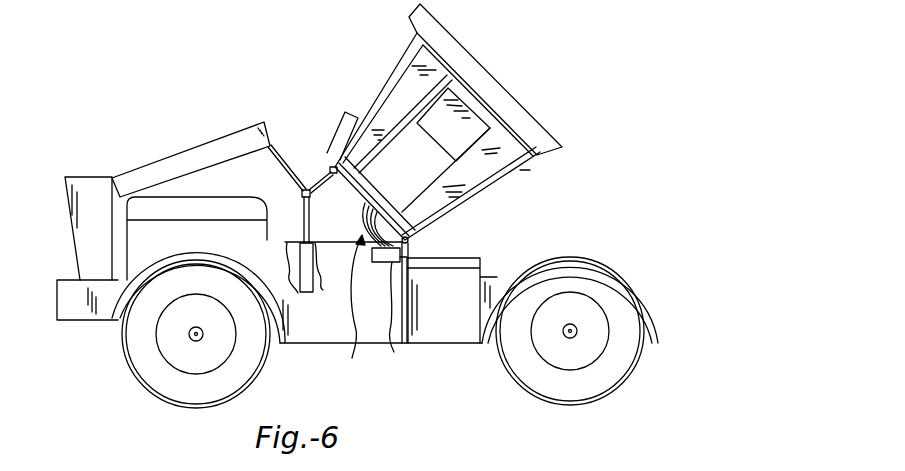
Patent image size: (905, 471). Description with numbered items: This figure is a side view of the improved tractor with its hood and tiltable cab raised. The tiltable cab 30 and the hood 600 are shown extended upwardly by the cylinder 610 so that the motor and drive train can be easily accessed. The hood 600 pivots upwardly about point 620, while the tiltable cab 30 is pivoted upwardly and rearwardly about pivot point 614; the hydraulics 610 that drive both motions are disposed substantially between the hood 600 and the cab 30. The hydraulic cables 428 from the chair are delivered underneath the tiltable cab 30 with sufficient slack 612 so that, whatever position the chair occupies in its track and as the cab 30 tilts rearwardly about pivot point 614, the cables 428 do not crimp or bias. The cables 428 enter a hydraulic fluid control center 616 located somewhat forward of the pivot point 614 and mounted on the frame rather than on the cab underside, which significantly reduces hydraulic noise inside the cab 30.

The tiltable cab 30 is at (499, 81).
The hood 600 is at (190, 148).
The cylinder 610 is at (322, 292).
The slack 612 is at (357, 210).
The pivot point 614 is at (410, 240).
The hydraulic fluid control center 616 is at (406, 313).
The point 620 is at (112, 178).
The hydraulic cables 428 is at (361, 309).